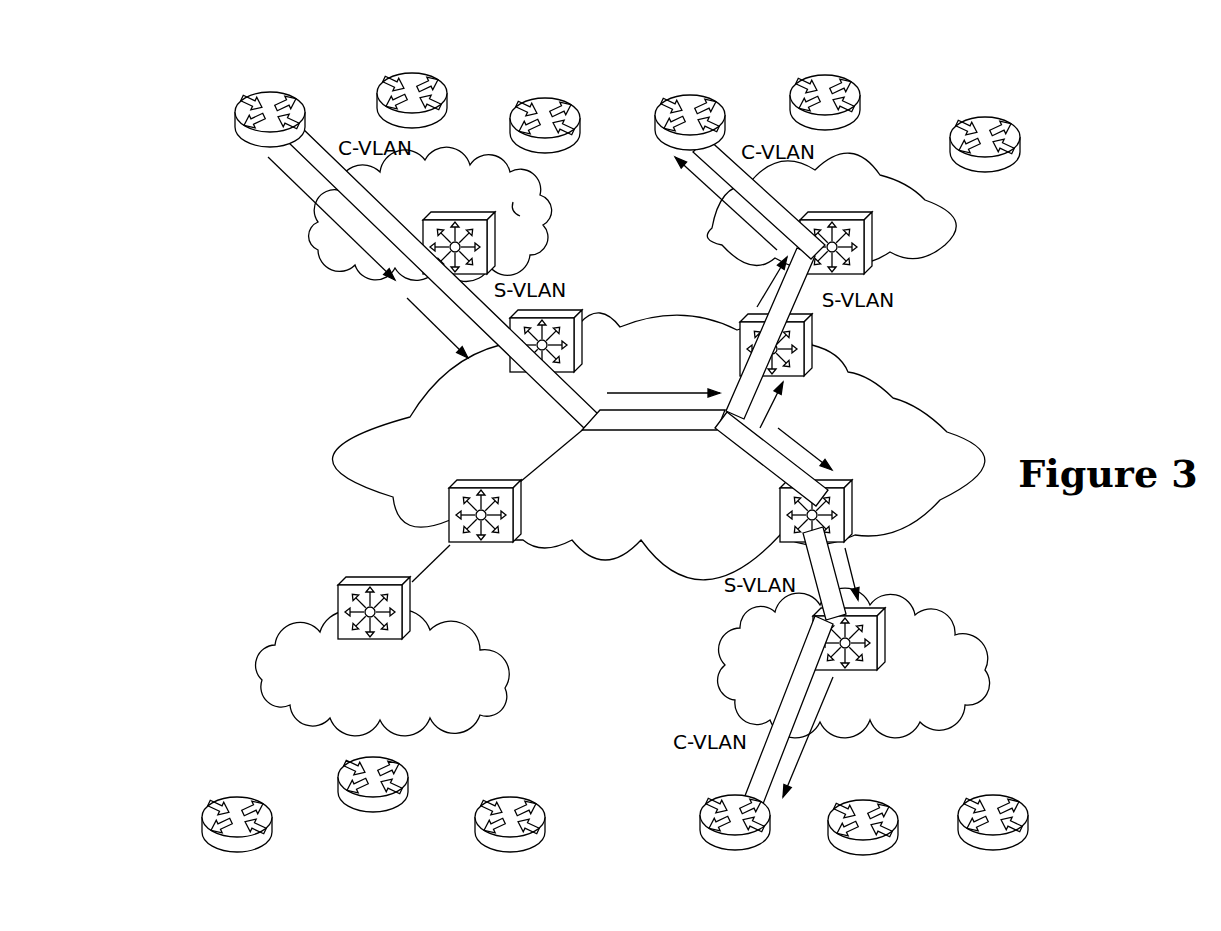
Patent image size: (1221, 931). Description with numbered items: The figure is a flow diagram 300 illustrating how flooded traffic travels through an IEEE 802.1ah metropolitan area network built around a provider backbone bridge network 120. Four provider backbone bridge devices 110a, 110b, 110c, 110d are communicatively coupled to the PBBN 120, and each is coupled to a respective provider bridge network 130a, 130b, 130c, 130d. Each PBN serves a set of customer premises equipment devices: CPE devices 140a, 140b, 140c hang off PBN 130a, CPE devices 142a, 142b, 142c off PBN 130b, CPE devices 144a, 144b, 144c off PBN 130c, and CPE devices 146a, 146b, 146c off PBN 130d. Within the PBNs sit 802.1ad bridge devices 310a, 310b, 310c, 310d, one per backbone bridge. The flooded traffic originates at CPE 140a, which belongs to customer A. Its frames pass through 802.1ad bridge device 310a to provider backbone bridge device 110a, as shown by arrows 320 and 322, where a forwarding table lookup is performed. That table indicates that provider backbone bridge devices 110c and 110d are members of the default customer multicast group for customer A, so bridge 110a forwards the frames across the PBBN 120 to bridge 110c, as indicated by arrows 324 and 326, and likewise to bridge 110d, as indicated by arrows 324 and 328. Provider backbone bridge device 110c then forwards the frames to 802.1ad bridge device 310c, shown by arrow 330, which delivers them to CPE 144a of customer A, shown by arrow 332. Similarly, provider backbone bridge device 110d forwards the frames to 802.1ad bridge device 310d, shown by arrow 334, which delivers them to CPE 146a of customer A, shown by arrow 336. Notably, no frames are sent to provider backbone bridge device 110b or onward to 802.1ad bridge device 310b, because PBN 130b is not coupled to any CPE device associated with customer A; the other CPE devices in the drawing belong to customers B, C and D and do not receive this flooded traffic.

The flow diagram 300 is at (128, 153).
The provider backbone bridge device 110a is at (520, 376).
The provider backbone bridge device 110b is at (470, 480).
The provider backbone bridge device 110c is at (812, 355).
The provider backbone bridge device 110d is at (853, 495).
The provider backbone bridge network 120 is at (605, 560).
The provider bridge network 130a is at (300, 250).
The provider bridge network 130b is at (508, 686).
The provider bridge network 130c is at (960, 232).
The provider bridge network 130d is at (985, 688).
The customer premises equipment device 140a is at (237, 122).
The customer premises equipment device 140b is at (377, 95).
The customer premises equipment device 140c is at (512, 114).
The customer premises equipment device 142a is at (240, 795).
The customer premises equipment device 142b is at (385, 758).
The customer premises equipment device 142c is at (528, 795).
The customer premises equipment device 144a is at (660, 122).
The customer premises equipment device 144b is at (855, 92).
The customer premises equipment device 144c is at (1022, 140).
The customer premises equipment device 146a is at (700, 822).
The customer premises equipment device 146b is at (895, 792).
The customer premises equipment device 146c is at (993, 793).
The 802.1ad bridge device 310a is at (497, 242).
The 802.1ad bridge device 310b is at (365, 578).
The 802.1ad bridge device 310c is at (875, 212).
The 802.1ad bridge device 310d is at (882, 610).
The arrow 320 is at (290, 198).
The arrow 322 is at (412, 322).
The arrow 324 is at (662, 396).
The arrow 326 is at (775, 405).
The arrow 328 is at (813, 445).
The arrow 330 is at (760, 290).
The arrow 332 is at (710, 200).
The arrow 334 is at (860, 560).
The arrow 336 is at (815, 745).